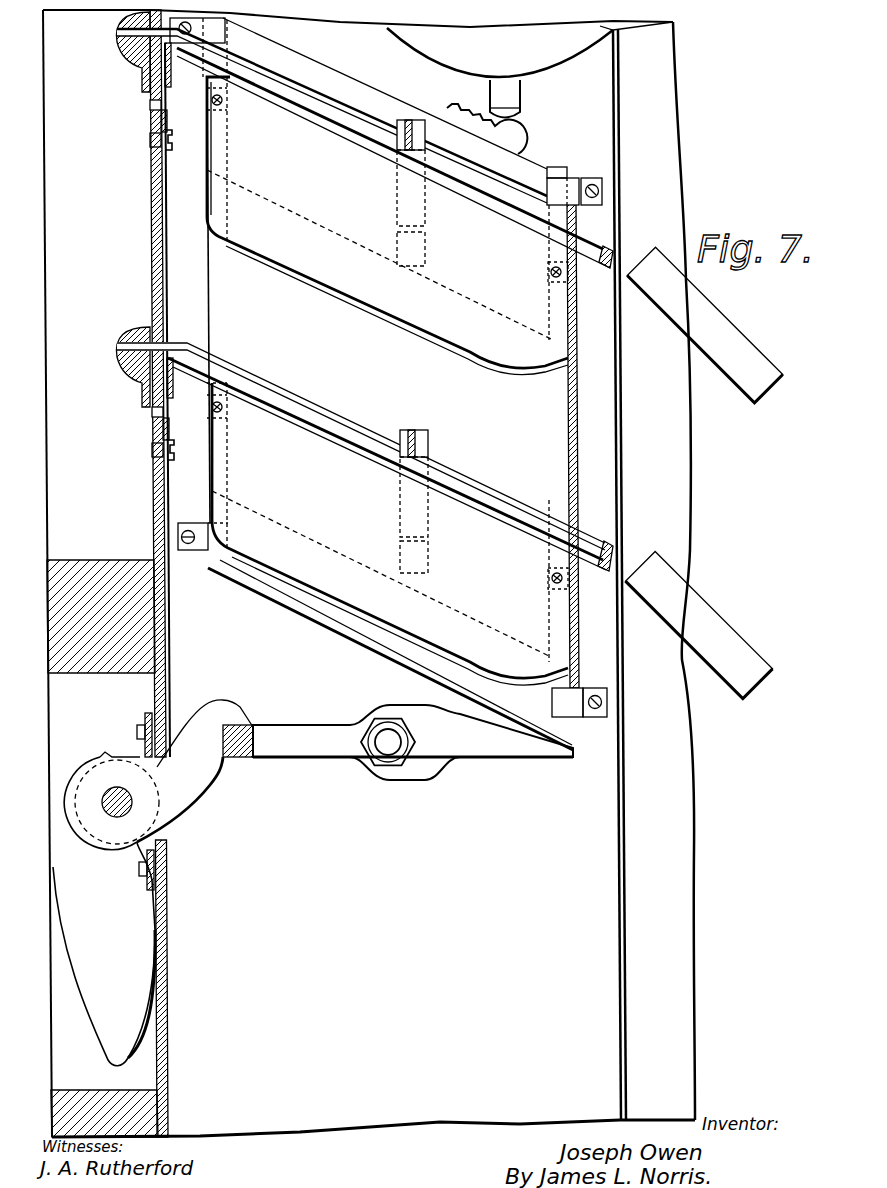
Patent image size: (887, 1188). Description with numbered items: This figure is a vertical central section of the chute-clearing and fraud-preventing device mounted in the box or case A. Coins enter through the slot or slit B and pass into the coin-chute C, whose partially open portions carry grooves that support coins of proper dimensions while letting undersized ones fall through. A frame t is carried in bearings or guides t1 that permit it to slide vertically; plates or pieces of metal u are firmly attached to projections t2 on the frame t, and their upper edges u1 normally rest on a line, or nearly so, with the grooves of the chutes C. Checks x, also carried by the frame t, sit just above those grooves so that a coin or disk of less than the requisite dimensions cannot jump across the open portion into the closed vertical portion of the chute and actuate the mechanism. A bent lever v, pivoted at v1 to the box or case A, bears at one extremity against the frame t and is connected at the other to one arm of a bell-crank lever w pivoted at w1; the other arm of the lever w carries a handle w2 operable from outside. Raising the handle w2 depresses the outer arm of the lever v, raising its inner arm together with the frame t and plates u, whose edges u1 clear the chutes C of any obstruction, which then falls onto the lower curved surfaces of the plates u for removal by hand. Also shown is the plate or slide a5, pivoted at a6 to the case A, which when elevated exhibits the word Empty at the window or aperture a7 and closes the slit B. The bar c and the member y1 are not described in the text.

The box or case A is at (369, 573).
The slot or slit B is at (118, 33).
The coin-chute C is at (390, 294).
The cross bar c is at (703, 472).
The frame t is at (180, 22).
The bearings or guides t1 is at (390, 368).
The projections t2 is at (579, 702).
The plates or pieces of metal u is at (387, 352).
The upper edges u1 is at (478, 198).
The bent lever v is at (413, 742).
The pivot v1 is at (388, 760).
The bell-crank lever w is at (158, 795).
The pivot w1 is at (117, 802).
The handle w2 is at (104, 954).
The checks x is at (410, 122).
The catch y1 is at (487, 117).
The plate or slide a5 is at (170, 118).
The pivot a6 is at (170, 152).
The window or aperture a7 is at (150, 105).